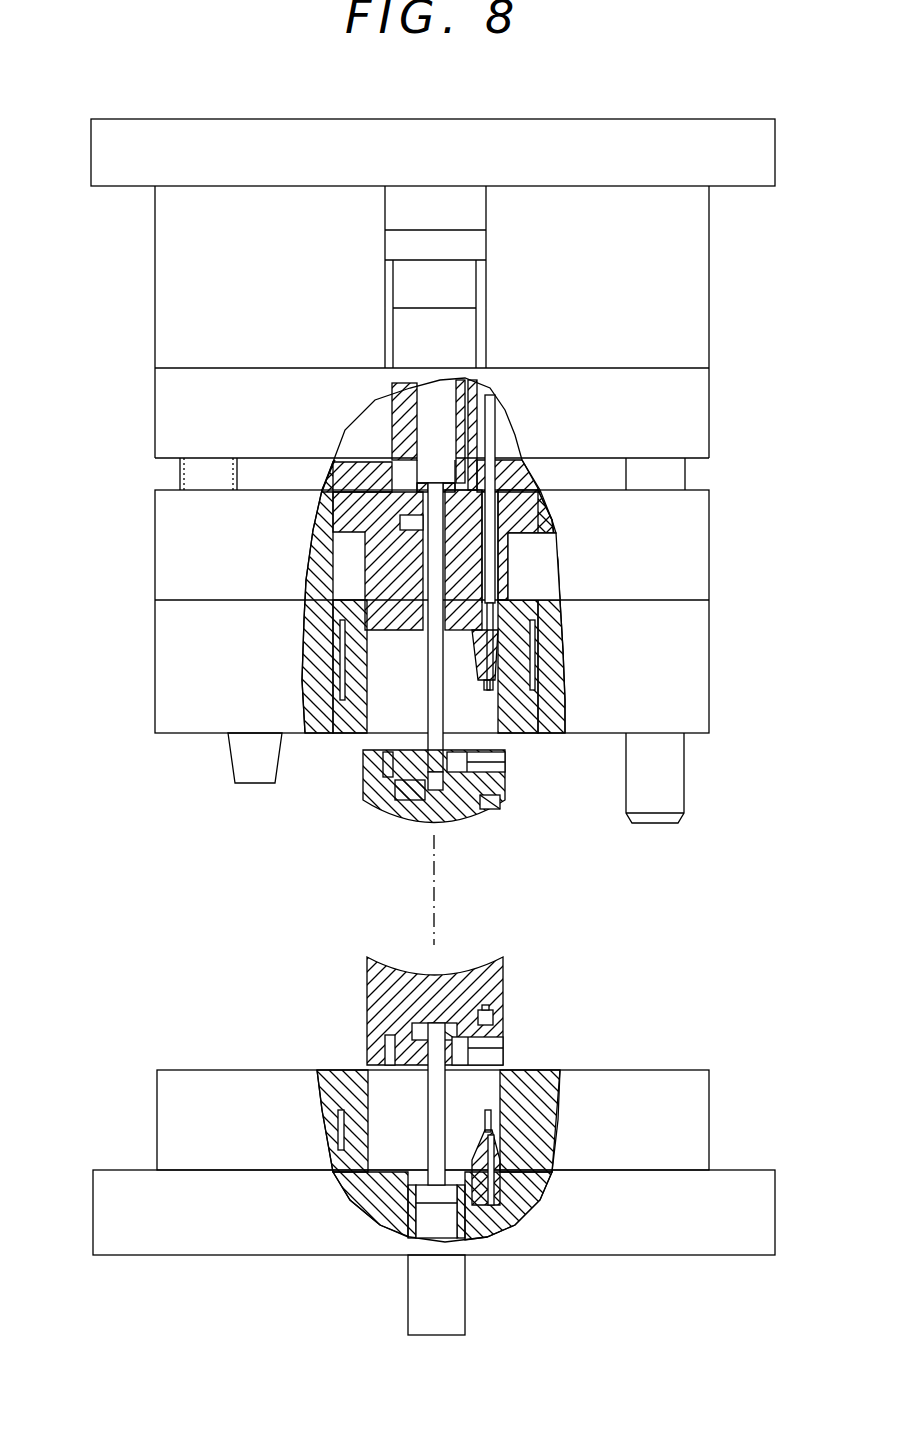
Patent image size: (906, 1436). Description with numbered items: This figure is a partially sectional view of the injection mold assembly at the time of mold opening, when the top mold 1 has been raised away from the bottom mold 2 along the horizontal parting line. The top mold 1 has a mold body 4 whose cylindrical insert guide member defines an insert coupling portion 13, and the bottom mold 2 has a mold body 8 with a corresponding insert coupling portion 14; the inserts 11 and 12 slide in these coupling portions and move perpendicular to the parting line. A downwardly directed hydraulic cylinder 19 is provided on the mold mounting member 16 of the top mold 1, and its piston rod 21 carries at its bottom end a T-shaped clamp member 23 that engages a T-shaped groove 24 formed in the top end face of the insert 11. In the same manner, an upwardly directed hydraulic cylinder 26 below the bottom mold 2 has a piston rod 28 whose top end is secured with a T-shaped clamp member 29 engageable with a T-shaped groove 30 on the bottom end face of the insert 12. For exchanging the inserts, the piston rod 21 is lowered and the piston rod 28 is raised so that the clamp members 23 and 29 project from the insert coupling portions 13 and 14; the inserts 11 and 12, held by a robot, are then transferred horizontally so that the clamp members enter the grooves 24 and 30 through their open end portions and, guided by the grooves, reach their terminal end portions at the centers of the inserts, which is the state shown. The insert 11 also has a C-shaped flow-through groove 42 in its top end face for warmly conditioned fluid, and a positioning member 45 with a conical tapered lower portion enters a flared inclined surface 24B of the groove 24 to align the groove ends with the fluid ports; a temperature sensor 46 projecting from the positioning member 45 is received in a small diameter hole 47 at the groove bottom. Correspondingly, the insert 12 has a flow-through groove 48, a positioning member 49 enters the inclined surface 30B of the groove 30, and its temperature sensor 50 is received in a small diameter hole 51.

The top mold 1 is at (138, 566).
The bottom mold 2 is at (138, 1090).
The mold body 4 is at (165, 635).
The mold body 8 is at (170, 1118).
The insert 11 is at (365, 800).
The insert 12 is at (372, 992).
The insert coupling portion 13 is at (367, 660).
The insert coupling portion 14 is at (505, 1090).
The mold mounting member 16 is at (162, 320).
The hydraulic cylinder 19 is at (395, 420).
The piston rod 21 is at (430, 565).
The T-shaped clamp member 23 is at (410, 800).
The T-shaped groove 24 is at (455, 790).
The inclined surface 24B is at (495, 762).
The hydraulic cylinder 26 is at (410, 1302).
The piston rod 28 is at (430, 1140).
The T-shaped clamp member 29 is at (418, 1023).
The T-shaped groove 30 is at (455, 1023).
The inclined surface 30B is at (495, 1055).
The flow-through groove 42 is at (388, 752).
The positioning member 45 is at (500, 640).
The temperature sensor 46 is at (500, 695).
The small diameter hole 47 is at (500, 802).
The flow-through groove 48 is at (390, 1065).
The positioning member 49 is at (502, 1160).
The temperature sensor 50 is at (492, 1112).
The small diameter hole 51 is at (492, 1012).